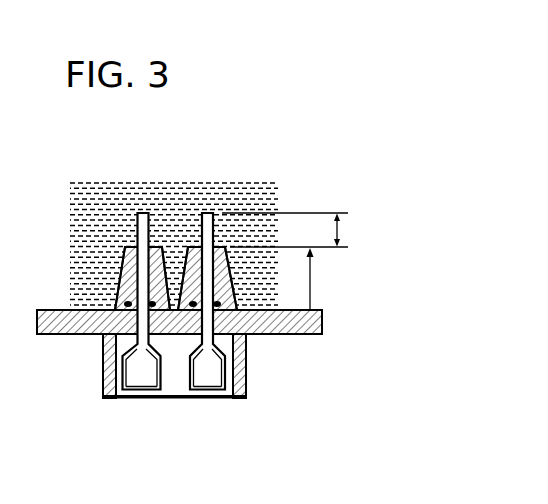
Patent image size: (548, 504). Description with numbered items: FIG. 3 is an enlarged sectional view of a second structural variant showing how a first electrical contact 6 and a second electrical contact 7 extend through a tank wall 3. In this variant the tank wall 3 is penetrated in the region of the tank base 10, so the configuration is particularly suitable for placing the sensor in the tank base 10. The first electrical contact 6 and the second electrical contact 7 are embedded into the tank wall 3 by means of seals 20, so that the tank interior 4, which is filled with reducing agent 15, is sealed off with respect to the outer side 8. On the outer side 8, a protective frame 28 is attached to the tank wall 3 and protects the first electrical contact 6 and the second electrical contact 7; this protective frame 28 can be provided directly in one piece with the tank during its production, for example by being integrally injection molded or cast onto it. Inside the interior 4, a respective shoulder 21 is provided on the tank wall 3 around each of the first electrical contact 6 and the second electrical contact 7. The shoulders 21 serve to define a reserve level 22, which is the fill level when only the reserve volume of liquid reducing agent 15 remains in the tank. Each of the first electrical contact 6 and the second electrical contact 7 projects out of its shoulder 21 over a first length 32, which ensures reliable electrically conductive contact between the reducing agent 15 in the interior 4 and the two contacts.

The tank wall 3 is at (312, 334).
The tank interior 4 is at (260, 158).
The first electrical contact 6 is at (160, 389).
The second electrical contact 7 is at (208, 386).
The outer side 8 is at (282, 402).
The tank base 10 is at (323, 329).
The reducing agent 15 is at (92, 197).
The seals 20 is at (120, 291).
The shoulder 21 is at (125, 247).
The reserve level 22 is at (310, 275).
The protective frame 28 is at (138, 399).
The first length 32 is at (341, 228).